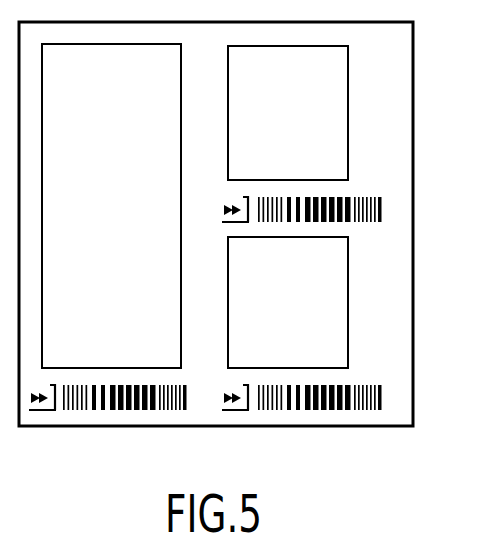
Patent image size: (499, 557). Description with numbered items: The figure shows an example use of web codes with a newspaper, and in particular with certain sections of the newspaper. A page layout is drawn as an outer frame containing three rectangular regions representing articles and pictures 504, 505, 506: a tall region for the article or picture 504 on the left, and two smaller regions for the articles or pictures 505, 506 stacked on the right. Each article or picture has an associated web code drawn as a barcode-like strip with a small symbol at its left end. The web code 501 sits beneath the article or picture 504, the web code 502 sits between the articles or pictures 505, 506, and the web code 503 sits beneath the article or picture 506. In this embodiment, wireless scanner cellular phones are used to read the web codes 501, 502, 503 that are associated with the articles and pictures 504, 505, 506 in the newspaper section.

The web code 501 is at (115, 409).
The web code 502 is at (381, 204).
The web code 503 is at (318, 410).
The article or picture 504 is at (132, 220).
The article or picture 505 is at (308, 126).
The article or picture 506 is at (307, 316).